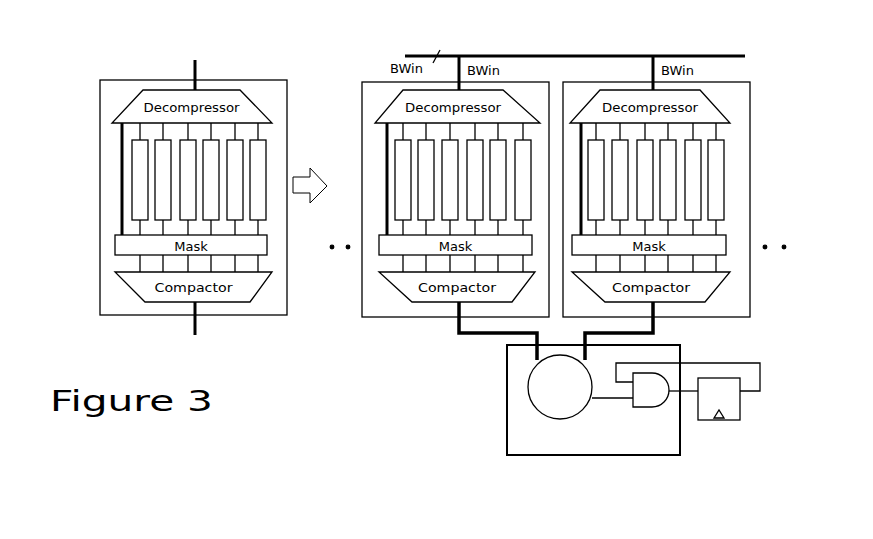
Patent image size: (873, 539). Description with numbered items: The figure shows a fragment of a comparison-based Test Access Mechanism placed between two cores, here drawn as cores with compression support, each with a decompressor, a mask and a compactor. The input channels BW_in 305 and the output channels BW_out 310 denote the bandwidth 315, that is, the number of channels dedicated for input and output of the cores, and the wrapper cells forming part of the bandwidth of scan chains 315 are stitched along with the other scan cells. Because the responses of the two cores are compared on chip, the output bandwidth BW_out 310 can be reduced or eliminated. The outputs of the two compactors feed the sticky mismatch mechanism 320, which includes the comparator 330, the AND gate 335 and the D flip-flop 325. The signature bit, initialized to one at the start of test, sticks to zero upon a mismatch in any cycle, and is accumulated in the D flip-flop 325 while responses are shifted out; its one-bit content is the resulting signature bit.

The BW_in 305 is at (233, 60).
The BW_out 310 is at (233, 340).
The bandwidth 315 is at (137, 179).
The sticky mismatch mechanism 320 is at (620, 455).
The D flip-flop 325 is at (733, 410).
The comparator 330 is at (545, 408).
The AND gate 335 is at (641, 402).